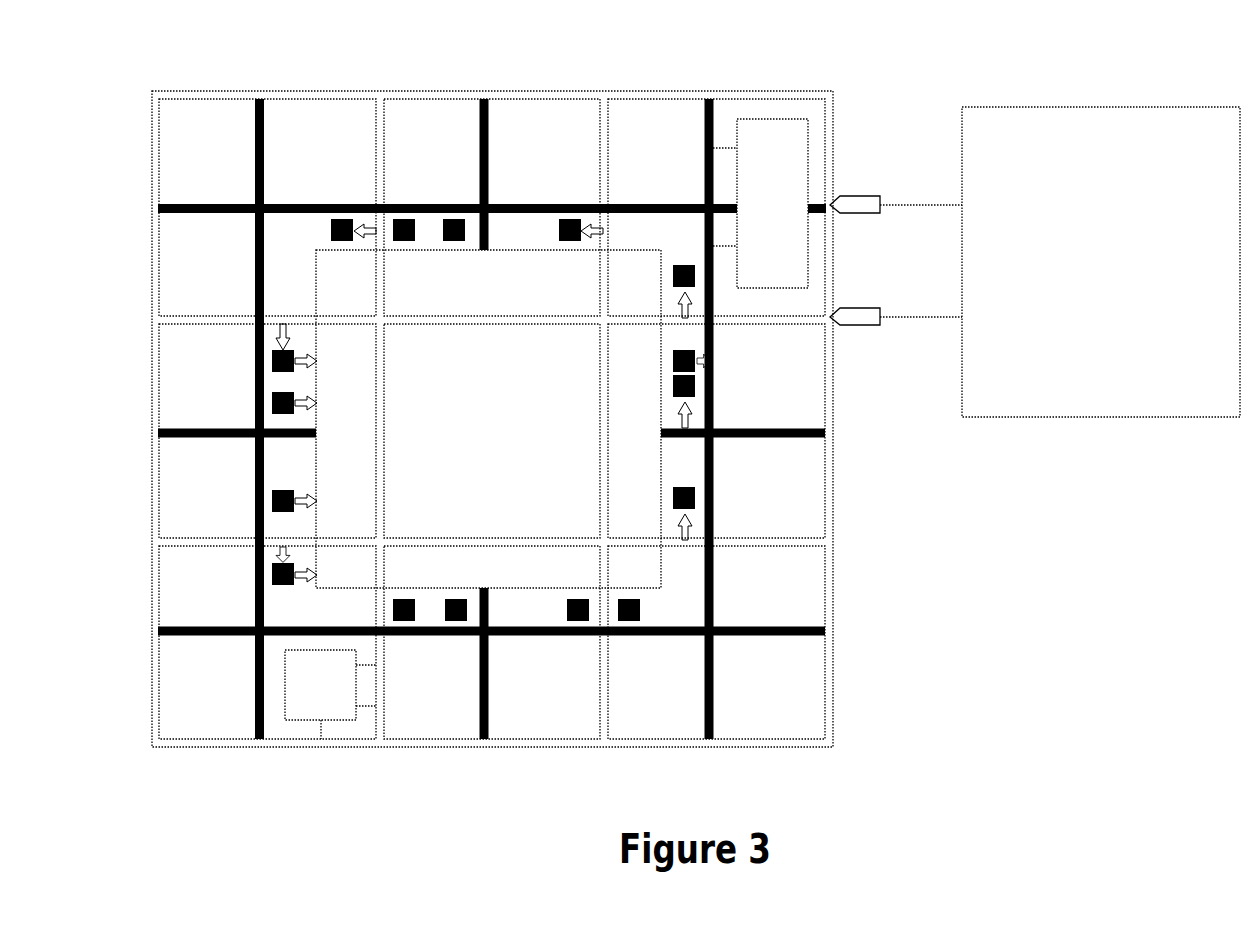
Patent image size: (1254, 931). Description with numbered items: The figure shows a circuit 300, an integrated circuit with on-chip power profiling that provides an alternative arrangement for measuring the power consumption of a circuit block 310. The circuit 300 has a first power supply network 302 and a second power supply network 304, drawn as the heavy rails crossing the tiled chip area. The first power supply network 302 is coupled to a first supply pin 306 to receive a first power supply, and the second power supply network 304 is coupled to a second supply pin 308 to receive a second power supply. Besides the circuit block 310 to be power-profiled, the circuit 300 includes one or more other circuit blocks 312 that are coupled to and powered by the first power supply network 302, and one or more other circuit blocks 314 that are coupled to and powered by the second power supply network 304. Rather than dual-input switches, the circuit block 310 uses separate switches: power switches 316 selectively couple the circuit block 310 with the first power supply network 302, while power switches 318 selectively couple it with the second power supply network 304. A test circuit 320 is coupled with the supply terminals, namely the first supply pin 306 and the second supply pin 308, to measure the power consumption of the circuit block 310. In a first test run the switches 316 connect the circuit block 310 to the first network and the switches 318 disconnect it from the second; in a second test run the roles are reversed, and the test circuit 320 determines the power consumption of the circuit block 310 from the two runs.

The circuit 300 is at (130, 70).
The first power supply network 302 is at (263, 148).
The second power supply network 304 is at (385, 163).
The first supply pin 306 is at (853, 200).
The second supply pin 308 is at (866, 324).
The circuit block 310 is at (488, 419).
The other circuit blocks 312 is at (760, 203).
The other circuit blocks 314 is at (330, 694).
The power switches 316 is at (462, 217).
The power switches 318 is at (334, 217).
The test circuit 320 is at (1101, 262).